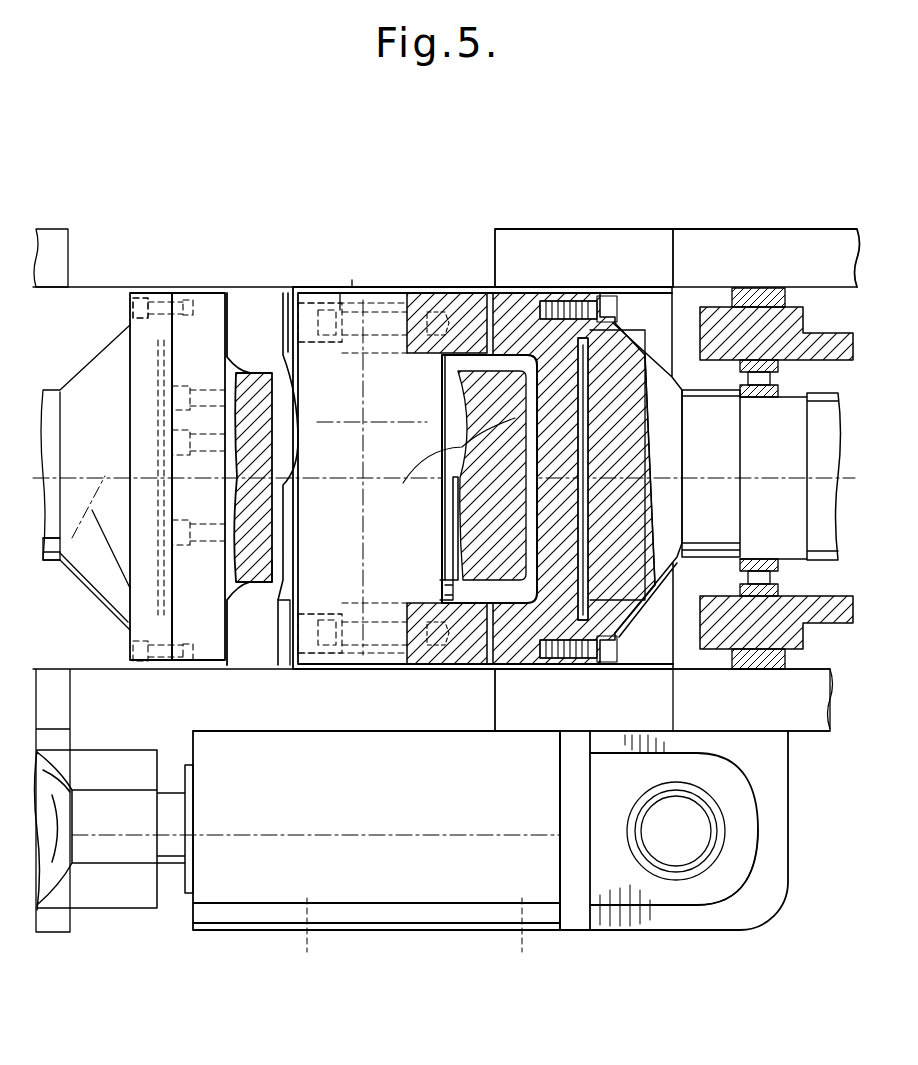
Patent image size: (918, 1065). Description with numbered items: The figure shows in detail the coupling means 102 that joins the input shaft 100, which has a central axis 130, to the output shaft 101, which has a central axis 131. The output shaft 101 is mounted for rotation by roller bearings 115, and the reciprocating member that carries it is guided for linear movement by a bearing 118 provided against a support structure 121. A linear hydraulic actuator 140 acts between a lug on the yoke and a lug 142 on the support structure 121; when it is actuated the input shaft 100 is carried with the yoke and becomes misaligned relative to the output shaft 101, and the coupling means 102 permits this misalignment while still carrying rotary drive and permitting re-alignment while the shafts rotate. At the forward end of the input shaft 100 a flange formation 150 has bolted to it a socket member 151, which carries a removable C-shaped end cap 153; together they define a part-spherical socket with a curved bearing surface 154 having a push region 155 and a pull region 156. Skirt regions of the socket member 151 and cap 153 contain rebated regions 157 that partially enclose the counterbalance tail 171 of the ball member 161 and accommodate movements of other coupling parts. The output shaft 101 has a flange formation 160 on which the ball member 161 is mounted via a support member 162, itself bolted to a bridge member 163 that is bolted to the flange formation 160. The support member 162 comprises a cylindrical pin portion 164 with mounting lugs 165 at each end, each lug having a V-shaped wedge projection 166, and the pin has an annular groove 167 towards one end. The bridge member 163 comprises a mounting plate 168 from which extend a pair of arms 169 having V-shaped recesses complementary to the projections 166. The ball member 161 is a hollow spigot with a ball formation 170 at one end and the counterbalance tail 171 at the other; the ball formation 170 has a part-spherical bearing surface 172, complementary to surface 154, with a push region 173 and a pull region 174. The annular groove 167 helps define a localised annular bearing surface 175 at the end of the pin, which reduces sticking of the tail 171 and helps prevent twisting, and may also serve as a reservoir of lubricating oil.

The input shaft 100 is at (48, 390).
The output shaft 101 is at (800, 474).
The coupling means 102 is at (352, 287).
The roller bearings 115 is at (840, 327).
The bearing 118 is at (752, 720).
The support structure 121 is at (760, 760).
The central axis 130 is at (72, 540).
The central axis 131 is at (732, 300).
The linear hydraulic actuator 140 is at (381, 884).
The lug 142 is at (680, 930).
The flange formation 150 is at (108, 352).
The socket member 151 is at (196, 340).
The C-shaped end cap 153 is at (460, 355).
The curved bearing surface 154 is at (282, 355).
The push region 155 is at (232, 548).
The pull region 156 is at (458, 479).
The rebated regions 157 is at (272, 565).
The flange formation 160 is at (700, 440).
The ball member 161 is at (487, 400).
The support member 162 is at (356, 543).
The bridge member 163 is at (592, 330).
The cylindrical pin portion 164 is at (342, 282).
The mounting lugs 165 is at (355, 300).
The V-shaped wedge projection 166 is at (398, 300).
The annular groove 167 is at (440, 552).
The mounting plate 168 is at (662, 413).
The arms 169 is at (516, 300).
The ball formation 170 is at (590, 335).
The counterbalance tail 171 is at (289, 612).
The part-spherical bearing surface 172 is at (648, 330).
The push region 173 is at (255, 373).
The pull region 174 is at (586, 345).
The localised annular bearing surface 175 is at (456, 598).